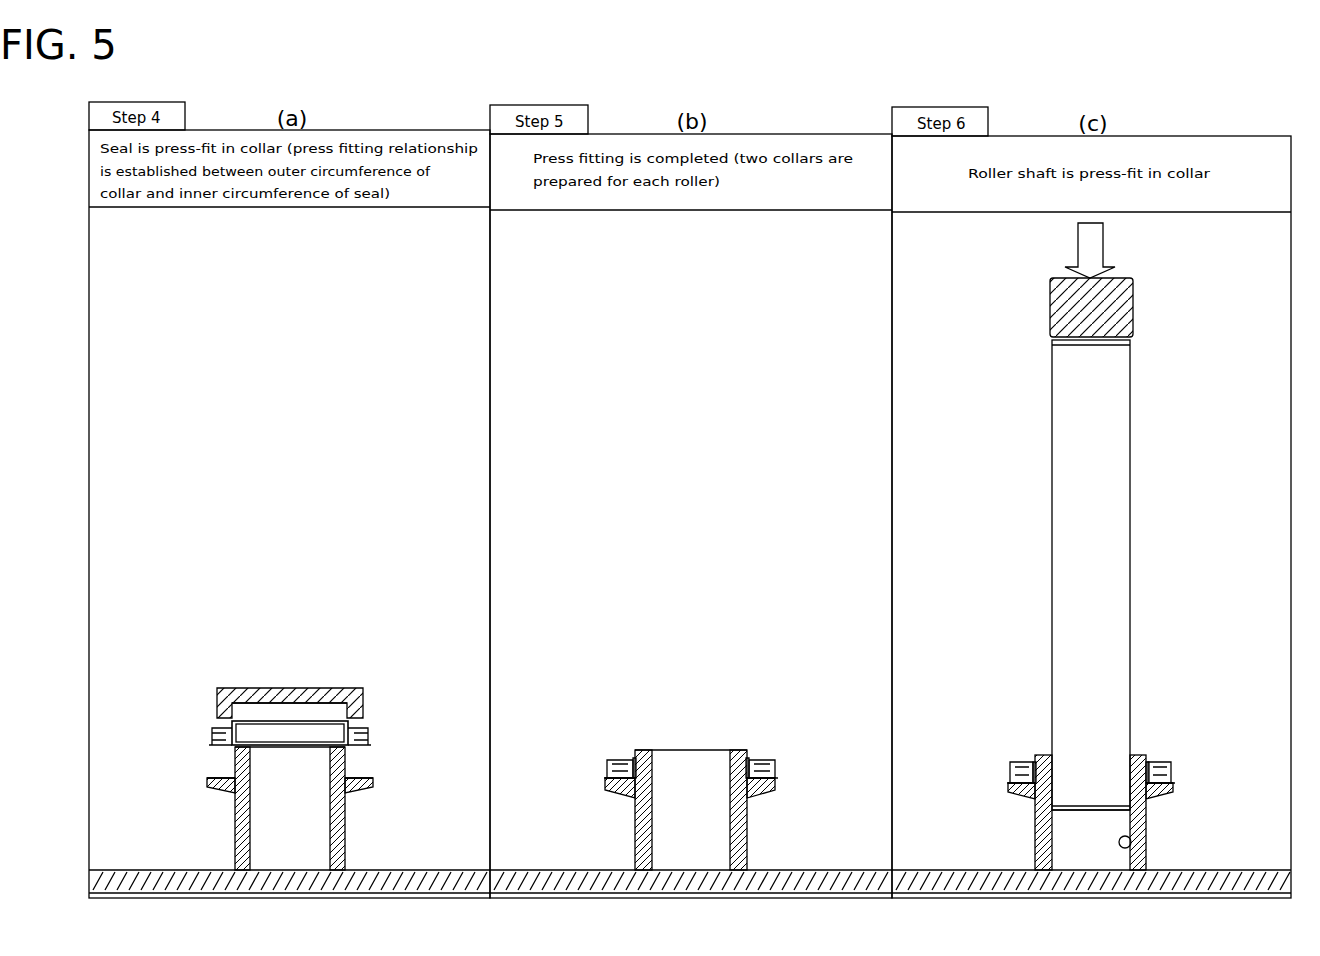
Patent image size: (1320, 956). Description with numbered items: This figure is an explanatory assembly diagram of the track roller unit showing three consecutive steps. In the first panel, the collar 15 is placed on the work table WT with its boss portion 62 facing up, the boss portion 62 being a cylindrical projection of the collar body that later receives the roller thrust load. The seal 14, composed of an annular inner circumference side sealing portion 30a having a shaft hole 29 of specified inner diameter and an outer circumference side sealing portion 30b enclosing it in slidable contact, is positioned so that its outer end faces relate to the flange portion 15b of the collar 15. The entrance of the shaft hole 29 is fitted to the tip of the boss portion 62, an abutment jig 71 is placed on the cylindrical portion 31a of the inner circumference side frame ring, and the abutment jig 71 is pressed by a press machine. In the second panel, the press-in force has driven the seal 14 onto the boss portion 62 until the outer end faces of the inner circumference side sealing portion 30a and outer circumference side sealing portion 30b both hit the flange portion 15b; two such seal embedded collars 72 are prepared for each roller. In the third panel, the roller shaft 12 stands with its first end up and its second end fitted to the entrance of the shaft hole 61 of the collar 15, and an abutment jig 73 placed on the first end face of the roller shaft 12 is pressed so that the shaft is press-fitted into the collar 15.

The roller shaft 12 is at (1133, 482).
The seal 14 is at (676, 661).
The collar 15 is at (232, 822).
The flange portion 15b is at (366, 791).
The shaft hole 29 is at (349, 757).
The inner circumference side sealing portion 30a is at (243, 733).
The outer circumference side sealing portion 30b is at (220, 727).
The cylindrical portion 31a is at (333, 712).
The shaft hole 61 is at (1136, 850).
The boss portion 62 is at (350, 768).
The abutment jig 71 is at (305, 681).
The seal embedded collar 72 is at (694, 705).
The abutment jig 73 is at (1135, 298).
The work table WT is at (450, 868).